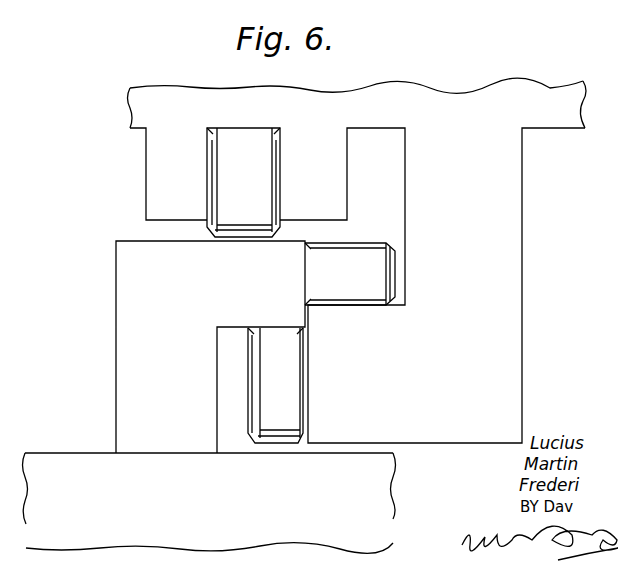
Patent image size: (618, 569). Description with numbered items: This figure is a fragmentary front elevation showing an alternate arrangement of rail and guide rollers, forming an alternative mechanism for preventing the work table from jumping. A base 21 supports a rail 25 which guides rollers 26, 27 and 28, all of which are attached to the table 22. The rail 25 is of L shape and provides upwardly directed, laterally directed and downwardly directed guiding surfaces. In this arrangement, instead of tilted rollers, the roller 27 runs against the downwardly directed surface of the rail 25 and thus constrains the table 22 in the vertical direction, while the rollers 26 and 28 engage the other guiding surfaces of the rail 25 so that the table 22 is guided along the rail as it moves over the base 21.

The upper die shoe 22 is at (432, 94).
The bushing 28 is at (237, 149).
The block 25 is at (133, 274).
The bushing 26 is at (367, 266).
The bushing 27 is at (283, 395).
The lower die shoe 21 is at (88, 468).